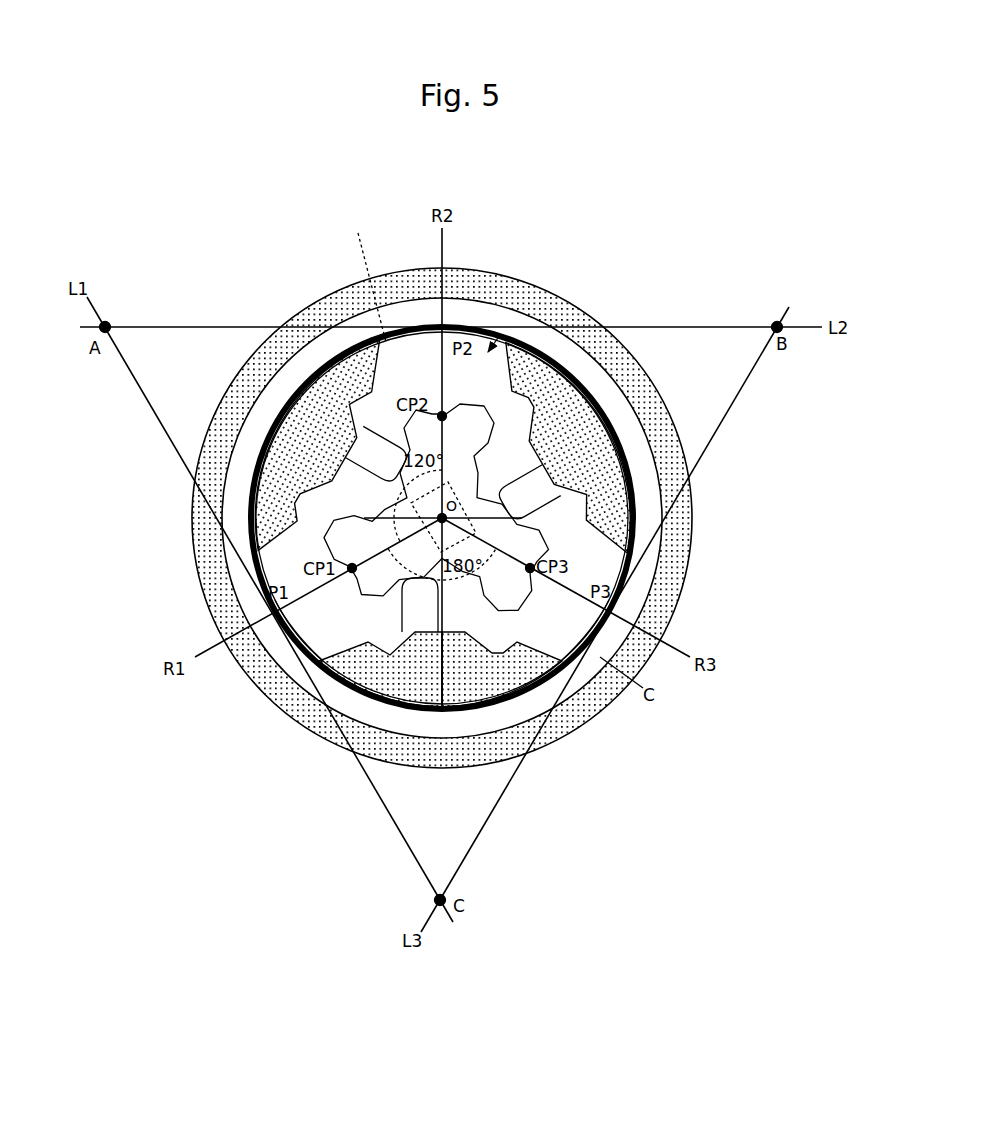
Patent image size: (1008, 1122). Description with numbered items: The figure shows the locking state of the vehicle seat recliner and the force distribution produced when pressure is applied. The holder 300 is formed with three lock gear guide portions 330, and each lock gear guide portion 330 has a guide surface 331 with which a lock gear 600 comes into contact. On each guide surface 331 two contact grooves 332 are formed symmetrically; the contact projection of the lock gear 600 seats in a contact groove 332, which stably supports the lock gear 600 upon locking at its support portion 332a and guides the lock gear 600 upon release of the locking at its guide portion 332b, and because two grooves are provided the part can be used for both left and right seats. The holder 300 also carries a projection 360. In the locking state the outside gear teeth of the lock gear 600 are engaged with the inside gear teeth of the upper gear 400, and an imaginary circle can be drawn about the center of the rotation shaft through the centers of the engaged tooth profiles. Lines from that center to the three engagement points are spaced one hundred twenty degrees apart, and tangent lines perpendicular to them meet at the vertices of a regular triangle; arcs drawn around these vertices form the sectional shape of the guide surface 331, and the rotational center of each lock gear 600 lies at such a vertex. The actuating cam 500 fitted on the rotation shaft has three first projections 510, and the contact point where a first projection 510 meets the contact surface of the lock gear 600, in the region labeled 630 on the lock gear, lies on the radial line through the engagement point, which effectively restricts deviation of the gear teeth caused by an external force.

The holder 300 is at (558, 281).
The lock gear guide portion 330 is at (592, 444).
The guide surface 331 is at (330, 468).
The contact groove 332 is at (263, 441).
The support portion of contact groove 332a is at (338, 695).
The guide portion of contact groove 332b is at (485, 720).
The projection 360 is at (690, 546).
The upper gear 400 is at (660, 590).
The actuating cam 500 is at (573, 422).
The first projection 510 is at (372, 559).
The lock gear 600 is at (452, 430).
The guide 630 is at (375, 609).